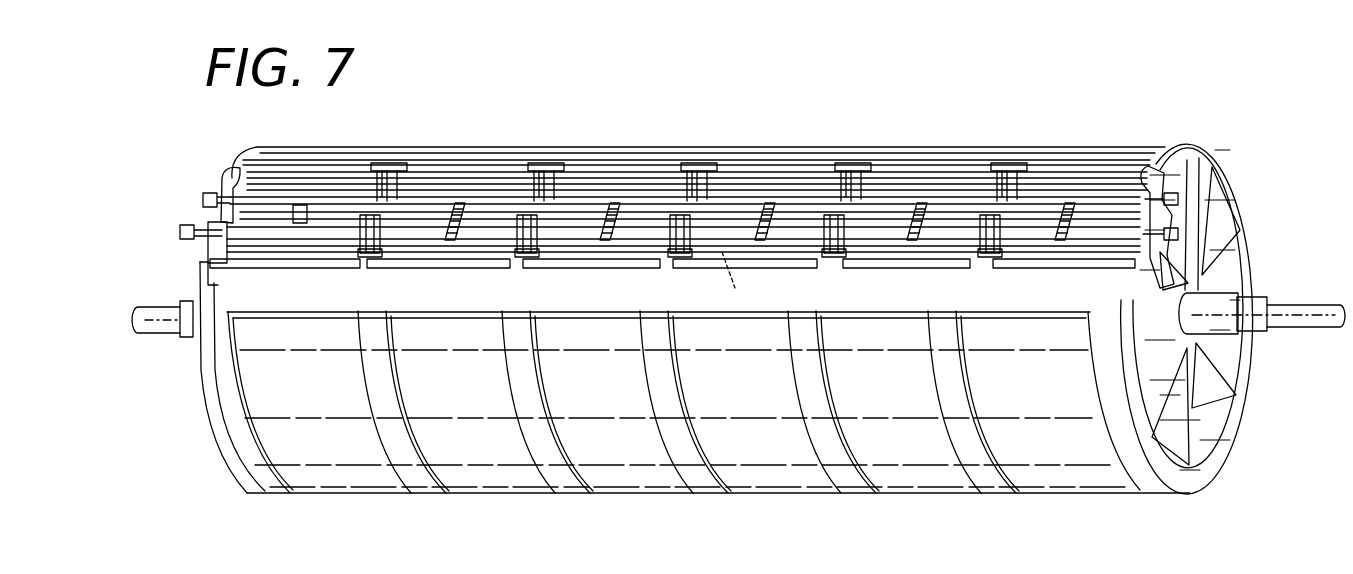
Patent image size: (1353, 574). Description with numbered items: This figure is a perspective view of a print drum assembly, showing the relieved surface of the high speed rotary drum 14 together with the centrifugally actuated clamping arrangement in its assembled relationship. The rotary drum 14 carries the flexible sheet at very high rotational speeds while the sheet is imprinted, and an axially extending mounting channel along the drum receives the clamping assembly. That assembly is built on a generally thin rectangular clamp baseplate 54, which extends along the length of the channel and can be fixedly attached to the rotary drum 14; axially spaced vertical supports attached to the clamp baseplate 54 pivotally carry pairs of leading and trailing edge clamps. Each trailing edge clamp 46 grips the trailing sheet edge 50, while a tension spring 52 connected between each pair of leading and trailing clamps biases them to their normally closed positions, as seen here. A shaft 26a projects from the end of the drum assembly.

The rotary drum 14 is at (1093, 457).
The shaft 26a is at (1300, 328).
The trailing edge clamp 46 is at (216, 184).
The trailing sheet edge 50 is at (1097, 153).
The tension spring 52 is at (463, 203).
The clamp baseplate 54 is at (1170, 250).